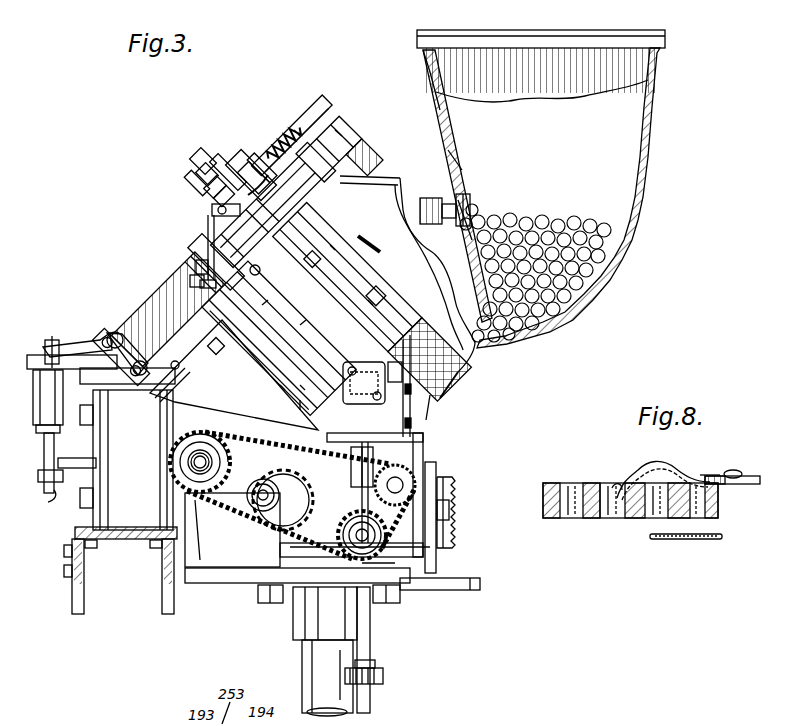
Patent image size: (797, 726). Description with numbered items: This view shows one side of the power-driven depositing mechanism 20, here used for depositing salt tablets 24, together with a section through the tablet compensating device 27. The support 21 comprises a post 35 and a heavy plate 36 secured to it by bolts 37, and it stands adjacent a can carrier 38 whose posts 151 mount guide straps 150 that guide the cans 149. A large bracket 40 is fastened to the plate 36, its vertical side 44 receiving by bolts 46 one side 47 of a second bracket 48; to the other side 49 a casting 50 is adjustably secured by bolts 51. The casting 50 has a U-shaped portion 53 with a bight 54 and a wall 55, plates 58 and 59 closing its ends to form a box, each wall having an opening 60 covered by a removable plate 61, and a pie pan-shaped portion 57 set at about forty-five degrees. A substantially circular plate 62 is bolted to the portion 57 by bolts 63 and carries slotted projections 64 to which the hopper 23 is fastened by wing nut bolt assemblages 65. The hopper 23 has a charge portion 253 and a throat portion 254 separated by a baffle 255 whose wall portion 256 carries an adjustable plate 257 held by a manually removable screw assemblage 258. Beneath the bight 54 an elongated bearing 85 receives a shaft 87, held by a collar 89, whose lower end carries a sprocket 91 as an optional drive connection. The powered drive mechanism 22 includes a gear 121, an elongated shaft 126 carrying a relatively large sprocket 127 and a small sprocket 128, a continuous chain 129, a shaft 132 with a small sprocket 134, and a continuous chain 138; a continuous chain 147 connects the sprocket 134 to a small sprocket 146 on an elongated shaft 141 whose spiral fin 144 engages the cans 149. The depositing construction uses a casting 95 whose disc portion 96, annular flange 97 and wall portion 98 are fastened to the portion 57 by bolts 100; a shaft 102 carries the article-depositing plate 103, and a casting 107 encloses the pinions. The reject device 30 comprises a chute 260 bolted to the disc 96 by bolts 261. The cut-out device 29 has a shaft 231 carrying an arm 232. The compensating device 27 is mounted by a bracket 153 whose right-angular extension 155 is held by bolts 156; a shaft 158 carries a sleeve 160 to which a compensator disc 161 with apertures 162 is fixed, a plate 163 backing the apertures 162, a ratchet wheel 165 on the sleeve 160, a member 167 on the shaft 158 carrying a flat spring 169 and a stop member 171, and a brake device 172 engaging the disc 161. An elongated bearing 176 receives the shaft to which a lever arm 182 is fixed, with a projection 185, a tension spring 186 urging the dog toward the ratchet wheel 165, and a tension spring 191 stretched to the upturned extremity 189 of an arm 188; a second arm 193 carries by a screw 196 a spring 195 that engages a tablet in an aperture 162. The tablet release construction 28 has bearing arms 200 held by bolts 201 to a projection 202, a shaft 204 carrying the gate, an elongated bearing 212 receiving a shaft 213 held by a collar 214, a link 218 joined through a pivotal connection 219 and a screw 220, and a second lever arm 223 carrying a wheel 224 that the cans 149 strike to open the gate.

In FIG. 3, the depositing mechanism 20 is at (347, 75).
In FIG. 3, the support 21 is at (288, 625).
In FIG. 3, the powered drive mechanism 22 is at (458, 484).
In FIG. 3, the hopper 23 is at (640, 250).
In FIG. 3, the tablets 24 is at (590, 222).
In FIG. 3, the tablet compensating device 27 is at (257, 150).
In FIG. 8, the tablet compensating device 27 is at (728, 452).
In FIG. 3, the tablet release construction 28 is at (38, 325).
In FIG. 3, the cut-out device 29 is at (200, 247).
In FIG. 3, the reject device 30 is at (240, 383).
In FIG. 3, the post 35 is at (303, 672).
In FIG. 3, the heavy plate 36 is at (455, 592).
In FIG. 3, the bolts 37 is at (265, 598).
In FIG. 3, the can carrier 38 is at (122, 560).
In FIG. 3, the large bracket 40 is at (440, 575).
In FIG. 3, the other side of bracket 44 is at (437, 466).
In FIG. 3, the bolts 46 is at (456, 515).
In FIG. 3, the one side of second bracket 47 is at (424, 456).
In FIG. 3, the second bracket 48 is at (428, 437).
In FIG. 3, the other side of bracket 49 is at (327, 437).
In FIG. 3, the casting 50 is at (348, 440).
In FIG. 3, the bolts 51 is at (300, 470).
In FIG. 3, the U-shaped portion 53 is at (400, 466).
In FIG. 3, the bight 54 is at (365, 430).
In FIG. 3, the wall 55 is at (412, 406).
In FIG. 3, the pie pan-shaped portion 57 is at (390, 330).
In FIG. 3, the plate 58 is at (430, 395).
In FIG. 3, the plate 59 is at (262, 362).
In FIG. 3, the opening 60 is at (300, 405).
In FIG. 3, the plate 61 is at (318, 384).
In FIG. 3, the circular plate 62 is at (462, 374).
In FIG. 3, the bolts 63 is at (290, 280).
In FIG. 3, the slotted projection 64 is at (360, 270).
In FIG. 3, the wing nut bolt assemblages 65 is at (372, 302).
In FIG. 3, the elongated bearing 85 is at (352, 518).
In FIG. 3, the shaft 87 is at (372, 628).
In FIG. 3, the collar 89 is at (350, 530).
In FIG. 3, the sprocket 91 is at (385, 678).
In FIG. 3, the casting 95 is at (185, 300).
In FIG. 3, the disc portion 96 is at (192, 370).
In FIG. 3, the annular flange 97 is at (200, 290).
In FIG. 3, the wall portion 98 is at (262, 305).
In FIG. 3, the bolts 100 is at (300, 325).
In FIG. 3, the shaft 102 is at (200, 266).
In FIG. 3, the article-depositing plate 103 is at (198, 280).
In FIG. 3, the casting 107 is at (280, 385).
In FIG. 3, the gear 121 is at (455, 530).
In FIG. 3, the elongated shaft 126 is at (258, 500).
In FIG. 3, the large sprocket 127 is at (283, 525).
In FIG. 3, the small sprocket 128 is at (268, 510).
In FIG. 3, the continuous chain 129 is at (262, 455).
In FIG. 3, the shaft 132 is at (385, 550).
In FIG. 3, the small sprocket 134 is at (345, 555).
In FIG. 3, the continuous chain 138 is at (225, 448).
In FIG. 3, the elongated shaft 141 is at (188, 462).
In FIG. 3, the spiral fin 144 is at (170, 423).
In FIG. 3, the small sprocket 146 is at (175, 478).
In FIG. 3, the continuous chain 147 is at (220, 515).
In FIG. 3, the cans 149 is at (78, 530).
In FIG. 3, the guide straps 150 is at (92, 412).
In FIG. 3, the posts 151 is at (72, 575).
In FIG. 3, the bracket 153 is at (300, 238).
In FIG. 3, the right-angular extension 155 is at (335, 246).
In FIG. 3, the bolts 156 is at (215, 232).
In FIG. 3, the shaft 158 is at (210, 148).
In FIG. 3, the sleeve 160 is at (205, 173).
In FIG. 3, the compensator disc 161 is at (292, 217).
In FIG. 8, the compensator disc 161 is at (590, 520).
In FIG. 8, the apertures 162 is at (610, 495).
In FIG. 8, the plate 163 is at (690, 540).
In FIG. 3, the ratchet wheel 165 is at (235, 190).
In FIG. 3, the member 167 is at (195, 180).
In FIG. 3, the flat spring 169 is at (210, 185).
In FIG. 3, the stop member 171 is at (244, 150).
In FIG. 3, the brake device 172 is at (326, 120).
In FIG. 3, the elongated bearing 176 is at (370, 170).
In FIG. 3, the lever arm 182 is at (276, 138).
In FIG. 3, the projection 185 is at (308, 122).
In FIG. 3, the tension spring 186 is at (296, 130).
In FIG. 3, the arm 188 is at (348, 178).
In FIG. 3, the upturned extremity 189 is at (352, 150).
In FIG. 3, the tension spring 191 is at (338, 130).
In FIG. 8, the second arm 193 is at (748, 485).
In FIG. 3, the spring 195 is at (268, 175).
In FIG. 8, the spring 195 is at (663, 465).
In FIG. 8, the screw 196 is at (742, 472).
In FIG. 3, the bearing arms 200 is at (160, 332).
In FIG. 3, the bolts 201 is at (180, 390).
In FIG. 3, the projection 202 is at (170, 385).
In FIG. 3, the shaft 204 is at (113, 332).
In FIG. 3, the elongated bearing 212 is at (58, 410).
In FIG. 3, the shaft 213 is at (50, 475).
In FIG. 3, the collar 214 is at (45, 438).
In FIG. 3, the link 218 is at (78, 345).
In FIG. 3, the pivotal connection 219 is at (50, 342).
In FIG. 3, the screw 220 is at (100, 352).
In FIG. 3, the second lever arm 223 is at (52, 490).
In FIG. 3, the wheel 224 is at (80, 462).
In FIG. 3, the shaft 231 is at (215, 210).
In FIG. 3, the arm 232 is at (210, 258).
In FIG. 3, the charge portion 253 is at (638, 170).
In FIG. 3, the throat portion 254 is at (402, 190).
In FIG. 3, the baffle 255 is at (470, 185).
In FIG. 3, the wall portion 256 is at (455, 152).
In FIG. 3, the plate 257 is at (470, 225).
In FIG. 3, the screw assemblage 258 is at (445, 232).
In FIG. 3, the chute 260 is at (255, 362).
In FIG. 3, the bolts 261 is at (260, 272).